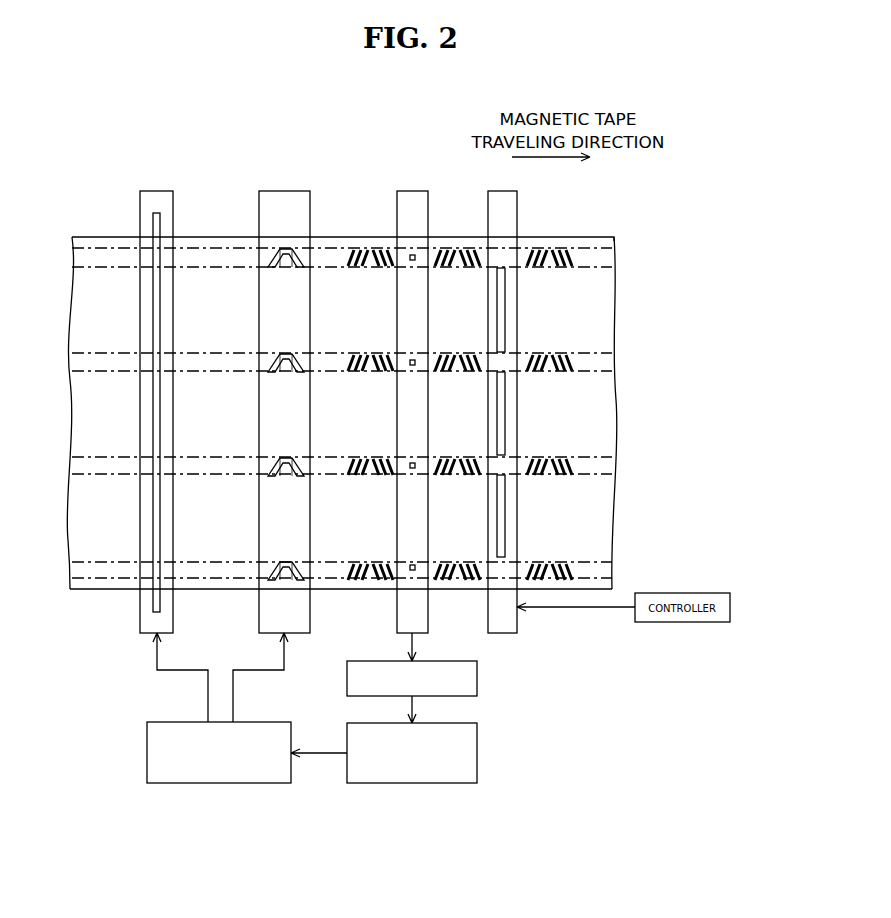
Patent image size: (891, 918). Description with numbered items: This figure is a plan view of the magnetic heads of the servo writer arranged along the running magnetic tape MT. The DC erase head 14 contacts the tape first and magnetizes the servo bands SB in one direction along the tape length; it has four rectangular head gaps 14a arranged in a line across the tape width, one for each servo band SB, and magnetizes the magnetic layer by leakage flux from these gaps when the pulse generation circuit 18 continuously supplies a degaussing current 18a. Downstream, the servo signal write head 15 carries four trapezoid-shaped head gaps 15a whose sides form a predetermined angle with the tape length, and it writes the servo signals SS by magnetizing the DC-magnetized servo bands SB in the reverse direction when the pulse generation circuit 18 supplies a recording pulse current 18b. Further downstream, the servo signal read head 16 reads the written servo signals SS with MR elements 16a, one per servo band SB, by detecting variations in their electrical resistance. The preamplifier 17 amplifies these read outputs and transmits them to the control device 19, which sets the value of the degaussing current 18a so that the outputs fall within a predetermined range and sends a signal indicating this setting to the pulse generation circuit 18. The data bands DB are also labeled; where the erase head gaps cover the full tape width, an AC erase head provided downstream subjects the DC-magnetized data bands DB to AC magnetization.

The DC erase head 14 is at (156, 191).
The head gap 14a is at (158, 580).
The servo signal write head 15 is at (294, 163).
The head gap 15a is at (281, 249).
The servo signal read head 16 is at (428, 622).
The MR element 16a is at (412, 260).
The preamplifier 17 is at (477, 680).
The pulse generation circuit 18 is at (218, 783).
The degaussing current 18a is at (166, 677).
The recording pulse current 18b is at (275, 677).
The control device 19 is at (412, 783).
The magnetic tape MT is at (608, 235).
The servo signal SS is at (612, 255).
The servo band SB is at (590, 290).
The data band DB is at (598, 311).
The AC erase head AC is at (517, 213).